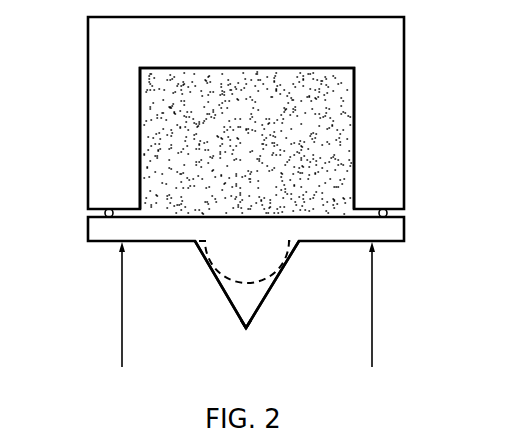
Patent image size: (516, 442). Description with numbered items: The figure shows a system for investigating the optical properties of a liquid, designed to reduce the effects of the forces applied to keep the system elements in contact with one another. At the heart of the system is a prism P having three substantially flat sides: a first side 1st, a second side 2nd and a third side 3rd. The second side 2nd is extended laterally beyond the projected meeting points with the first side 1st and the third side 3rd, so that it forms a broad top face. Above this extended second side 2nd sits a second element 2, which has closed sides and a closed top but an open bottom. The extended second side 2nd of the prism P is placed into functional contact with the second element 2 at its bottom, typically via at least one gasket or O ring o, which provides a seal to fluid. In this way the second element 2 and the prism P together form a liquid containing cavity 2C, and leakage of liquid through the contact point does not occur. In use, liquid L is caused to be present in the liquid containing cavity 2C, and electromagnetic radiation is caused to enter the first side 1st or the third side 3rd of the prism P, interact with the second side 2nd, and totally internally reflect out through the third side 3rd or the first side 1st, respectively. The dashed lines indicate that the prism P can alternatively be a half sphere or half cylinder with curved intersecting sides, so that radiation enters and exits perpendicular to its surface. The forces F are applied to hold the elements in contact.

The second element 2 is at (255, 55).
The liquid containing cavity 2C is at (206, 103).
The liquid L is at (252, 148).
The O ring o is at (105, 205).
The first side 1st is at (223, 292).
The second side 2nd is at (257, 219).
The third side 3rd is at (267, 302).
The prism P is at (227, 331).
The applied force F is at (245, 316).